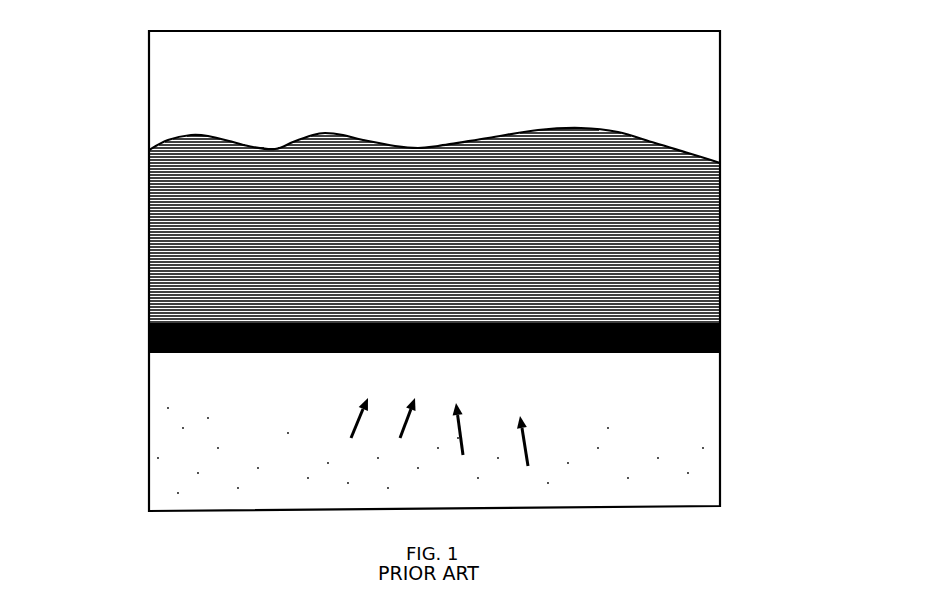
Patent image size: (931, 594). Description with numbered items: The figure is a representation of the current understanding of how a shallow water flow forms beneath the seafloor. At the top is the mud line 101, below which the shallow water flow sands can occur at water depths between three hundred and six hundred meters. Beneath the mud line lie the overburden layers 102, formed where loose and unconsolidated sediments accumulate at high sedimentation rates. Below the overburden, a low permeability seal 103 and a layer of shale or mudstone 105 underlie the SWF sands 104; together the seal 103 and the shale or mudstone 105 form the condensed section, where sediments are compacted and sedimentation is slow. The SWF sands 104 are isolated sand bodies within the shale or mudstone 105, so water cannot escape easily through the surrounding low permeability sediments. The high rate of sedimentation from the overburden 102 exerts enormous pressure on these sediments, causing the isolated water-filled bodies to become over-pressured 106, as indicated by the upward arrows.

The mud line 101 is at (446, 127).
The overburden layers 102 is at (722, 229).
The low permeability seal 103 is at (133, 327).
The SWF sands 104 is at (559, 395).
The layer of shale or mudstone 105 is at (740, 413).
The over-pressured 106 is at (323, 432).